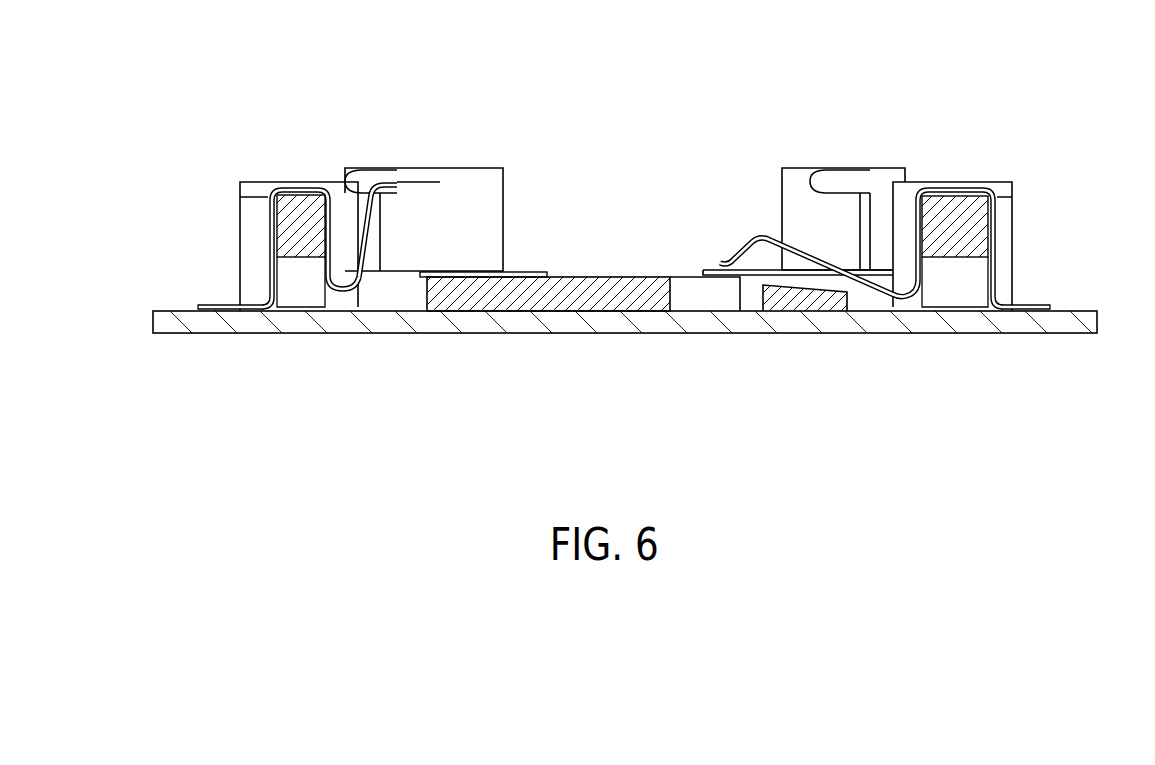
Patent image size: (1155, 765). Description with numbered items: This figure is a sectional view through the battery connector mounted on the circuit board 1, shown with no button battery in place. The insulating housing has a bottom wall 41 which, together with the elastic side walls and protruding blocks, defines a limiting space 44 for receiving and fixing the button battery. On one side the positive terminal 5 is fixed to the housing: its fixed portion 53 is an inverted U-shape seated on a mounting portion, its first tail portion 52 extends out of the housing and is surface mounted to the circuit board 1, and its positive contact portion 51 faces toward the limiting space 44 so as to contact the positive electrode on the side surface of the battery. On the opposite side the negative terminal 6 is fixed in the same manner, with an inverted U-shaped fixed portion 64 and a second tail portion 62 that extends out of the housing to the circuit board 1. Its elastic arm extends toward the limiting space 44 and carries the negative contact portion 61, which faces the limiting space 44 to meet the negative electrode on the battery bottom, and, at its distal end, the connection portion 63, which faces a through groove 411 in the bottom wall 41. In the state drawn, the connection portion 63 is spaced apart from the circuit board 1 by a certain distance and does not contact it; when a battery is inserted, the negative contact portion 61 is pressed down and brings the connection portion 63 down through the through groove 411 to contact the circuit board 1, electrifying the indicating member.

The circuit board 1 is at (940, 320).
The positive terminal 5 is at (318, 192).
The positive contact portion 51 is at (438, 186).
The first tail portion 52 is at (220, 303).
The fixed portion 53 is at (241, 208).
The negative terminal 6 is at (930, 192).
The negative contact portion 61 is at (770, 238).
The second tail portion 62 is at (1040, 303).
The connection portion 63 is at (736, 272).
The fixed portion 64 is at (998, 213).
The bottom wall 41 is at (515, 288).
The through groove 411 is at (696, 290).
The limiting space 44 is at (707, 87).